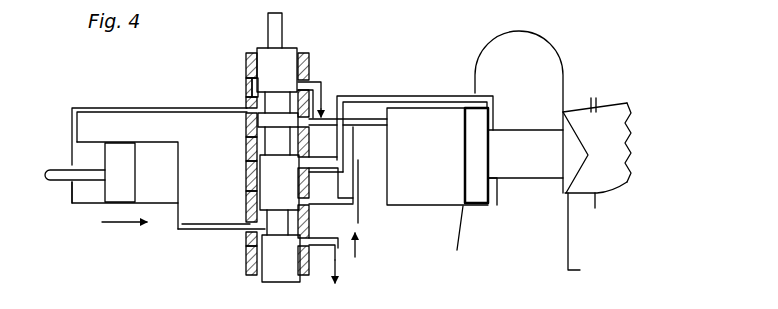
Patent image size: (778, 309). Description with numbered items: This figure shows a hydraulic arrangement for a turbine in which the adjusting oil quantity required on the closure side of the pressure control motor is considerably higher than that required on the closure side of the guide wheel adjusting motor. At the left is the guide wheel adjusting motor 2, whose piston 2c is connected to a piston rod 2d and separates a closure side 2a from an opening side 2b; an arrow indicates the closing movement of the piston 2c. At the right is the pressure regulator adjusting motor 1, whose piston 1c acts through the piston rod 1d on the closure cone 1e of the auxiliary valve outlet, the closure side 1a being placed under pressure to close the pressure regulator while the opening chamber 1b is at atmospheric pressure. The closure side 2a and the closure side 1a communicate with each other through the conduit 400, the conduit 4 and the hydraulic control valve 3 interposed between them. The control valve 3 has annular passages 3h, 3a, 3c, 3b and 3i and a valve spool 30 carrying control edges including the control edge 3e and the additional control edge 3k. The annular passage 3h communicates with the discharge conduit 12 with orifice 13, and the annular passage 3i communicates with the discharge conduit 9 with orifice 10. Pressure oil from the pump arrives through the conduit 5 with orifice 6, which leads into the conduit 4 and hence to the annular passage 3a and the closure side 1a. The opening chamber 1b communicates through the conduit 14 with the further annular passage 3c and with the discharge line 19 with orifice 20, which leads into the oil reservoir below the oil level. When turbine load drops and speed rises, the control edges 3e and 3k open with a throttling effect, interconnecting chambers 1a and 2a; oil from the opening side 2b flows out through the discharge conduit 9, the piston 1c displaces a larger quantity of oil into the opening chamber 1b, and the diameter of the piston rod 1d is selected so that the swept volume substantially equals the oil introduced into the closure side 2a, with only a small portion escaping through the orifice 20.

The conduit 400 is at (88, 110).
The guide wheel adjusting motor 2 is at (83, 145).
The closure side of the guide wheel adjusting motor 2a is at (82, 193).
The opening side of the guide wheel adjusting motor 2b is at (148, 153).
The piston 2c is at (111, 223).
The piston rod 2d is at (58, 172).
The hydraulic control valve 3 is at (260, 135).
The annular passage 3h is at (245, 65).
The control edge 3e is at (253, 88).
The annular passage 3a is at (258, 125).
The additional control edge 3k is at (265, 148).
The further annular passage 3c is at (253, 163).
The annular passage 3b is at (258, 200).
The annular passage 3i is at (255, 252).
The valve spool 30 is at (288, 55).
The discharge conduit 12 is at (317, 82).
The orifice 13 is at (328, 110).
The conduit 14 is at (362, 100).
The conduit 4 is at (372, 122).
The discharge line 19 is at (350, 168).
The orifice 20 is at (345, 172).
The orifice 6 is at (357, 177).
The conduit 5 is at (359, 213).
The discharge conduit 9 is at (337, 245).
The orifice 10 is at (340, 252).
The pressure regulator adjusting motor 1 is at (408, 208).
The closure side of the pressure adjusting motor 1a is at (422, 118).
The opening chamber 1b is at (492, 192).
The piston 1c is at (470, 182).
The piston rod 1d is at (540, 145).
The closure cone 1e is at (571, 165).